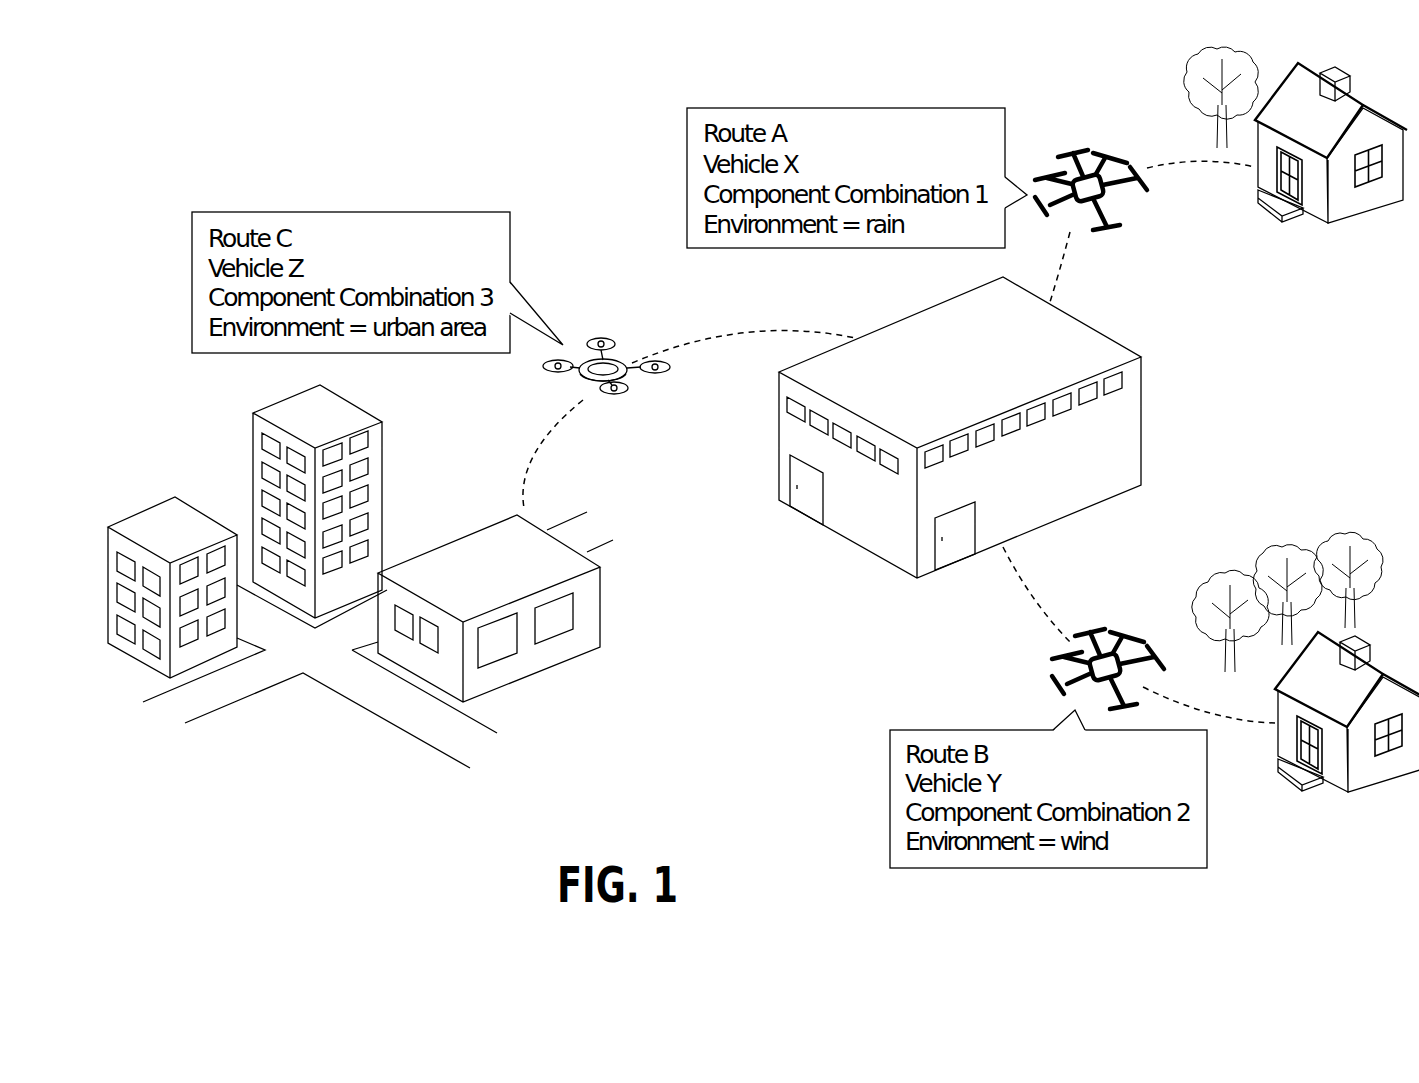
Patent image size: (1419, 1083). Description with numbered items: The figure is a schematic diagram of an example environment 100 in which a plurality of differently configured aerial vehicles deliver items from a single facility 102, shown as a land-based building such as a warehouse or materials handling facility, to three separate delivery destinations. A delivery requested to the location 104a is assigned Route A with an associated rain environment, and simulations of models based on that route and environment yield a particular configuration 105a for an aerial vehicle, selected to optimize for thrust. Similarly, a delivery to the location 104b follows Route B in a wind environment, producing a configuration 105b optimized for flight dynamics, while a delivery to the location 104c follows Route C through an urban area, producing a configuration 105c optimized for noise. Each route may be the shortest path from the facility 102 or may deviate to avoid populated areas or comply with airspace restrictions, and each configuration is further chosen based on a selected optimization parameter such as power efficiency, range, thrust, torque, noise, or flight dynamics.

The example environment 100 is at (298, 132).
The facility 102 is at (976, 378).
The location 104a is at (1352, 210).
The location 104b is at (1392, 777).
The location 104c is at (503, 687).
The configuration 105a is at (1083, 168).
The configuration 105b is at (1107, 653).
The configuration 105c is at (596, 337).